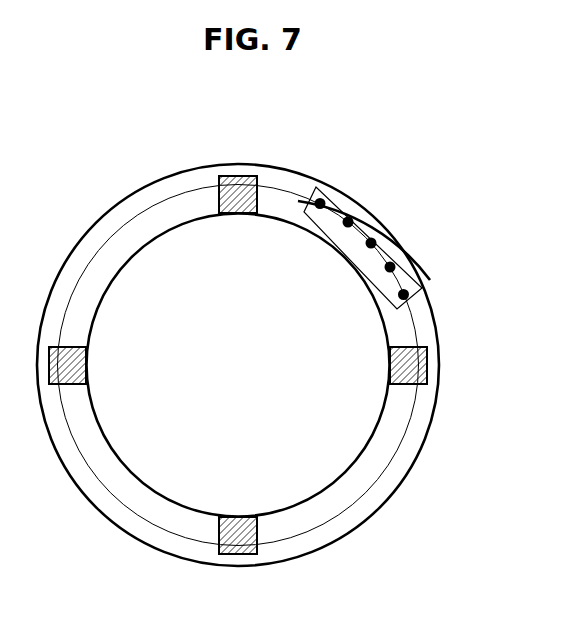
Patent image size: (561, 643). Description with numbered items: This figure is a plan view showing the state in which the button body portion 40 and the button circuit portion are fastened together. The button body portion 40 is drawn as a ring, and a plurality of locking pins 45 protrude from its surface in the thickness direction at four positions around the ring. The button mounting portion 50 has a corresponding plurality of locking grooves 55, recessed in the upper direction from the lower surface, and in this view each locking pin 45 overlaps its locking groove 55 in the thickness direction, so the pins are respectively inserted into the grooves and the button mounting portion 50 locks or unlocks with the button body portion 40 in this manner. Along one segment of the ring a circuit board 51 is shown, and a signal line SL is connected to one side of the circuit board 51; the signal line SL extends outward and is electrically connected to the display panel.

The button mounting portion 50 is at (134, 188).
The locking pin 45 is at (234, 184).
The locking groove 55 is at (223, 169).
The button body portion 40 is at (310, 174).
The circuit board 51 is at (403, 248).
The signal line SL is at (358, 209).